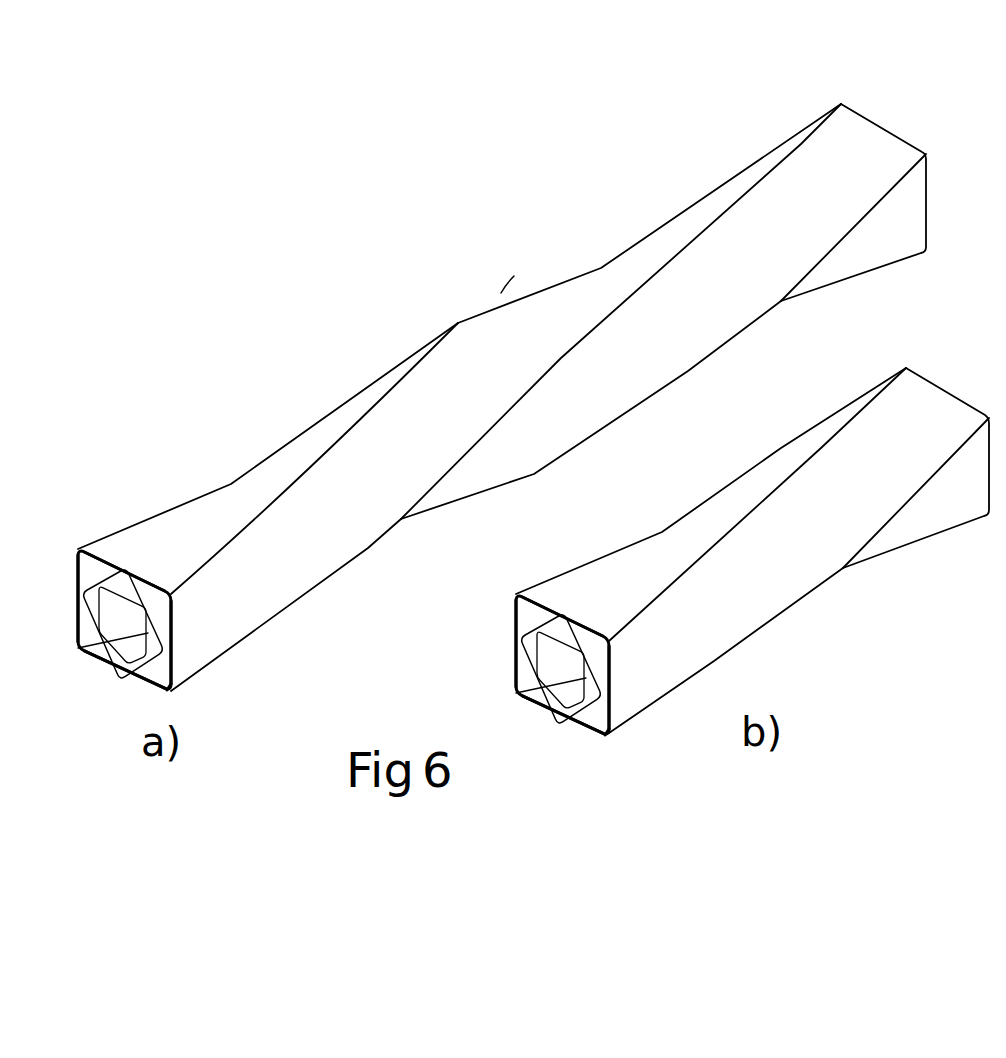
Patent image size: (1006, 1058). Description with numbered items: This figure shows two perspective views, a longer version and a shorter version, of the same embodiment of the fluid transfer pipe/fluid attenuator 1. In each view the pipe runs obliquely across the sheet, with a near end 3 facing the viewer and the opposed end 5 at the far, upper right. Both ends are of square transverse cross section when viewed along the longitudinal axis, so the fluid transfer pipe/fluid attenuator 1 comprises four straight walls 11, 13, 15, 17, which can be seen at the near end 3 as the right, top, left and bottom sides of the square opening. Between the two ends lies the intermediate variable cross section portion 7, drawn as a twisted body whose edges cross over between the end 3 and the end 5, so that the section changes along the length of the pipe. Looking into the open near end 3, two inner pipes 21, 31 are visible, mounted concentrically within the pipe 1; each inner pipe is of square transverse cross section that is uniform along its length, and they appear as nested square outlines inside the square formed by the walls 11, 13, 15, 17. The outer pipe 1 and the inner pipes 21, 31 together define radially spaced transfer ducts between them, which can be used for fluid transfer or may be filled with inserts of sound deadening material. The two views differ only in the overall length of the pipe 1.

The fluid transfer pipe/fluid attenuator 1 is at (429, 229).
The end 3 is at (50, 549).
The end 5 is at (903, 101).
The intermediate variable cross section portion 7 is at (750, 471).
The straight wall 11 is at (163, 616).
The straight wall 13 is at (130, 570).
The straight wall 15 is at (71, 596).
The straight wall 17 is at (103, 661).
The inner pipe 21 is at (163, 683).
The inner pipe 31 is at (118, 670).